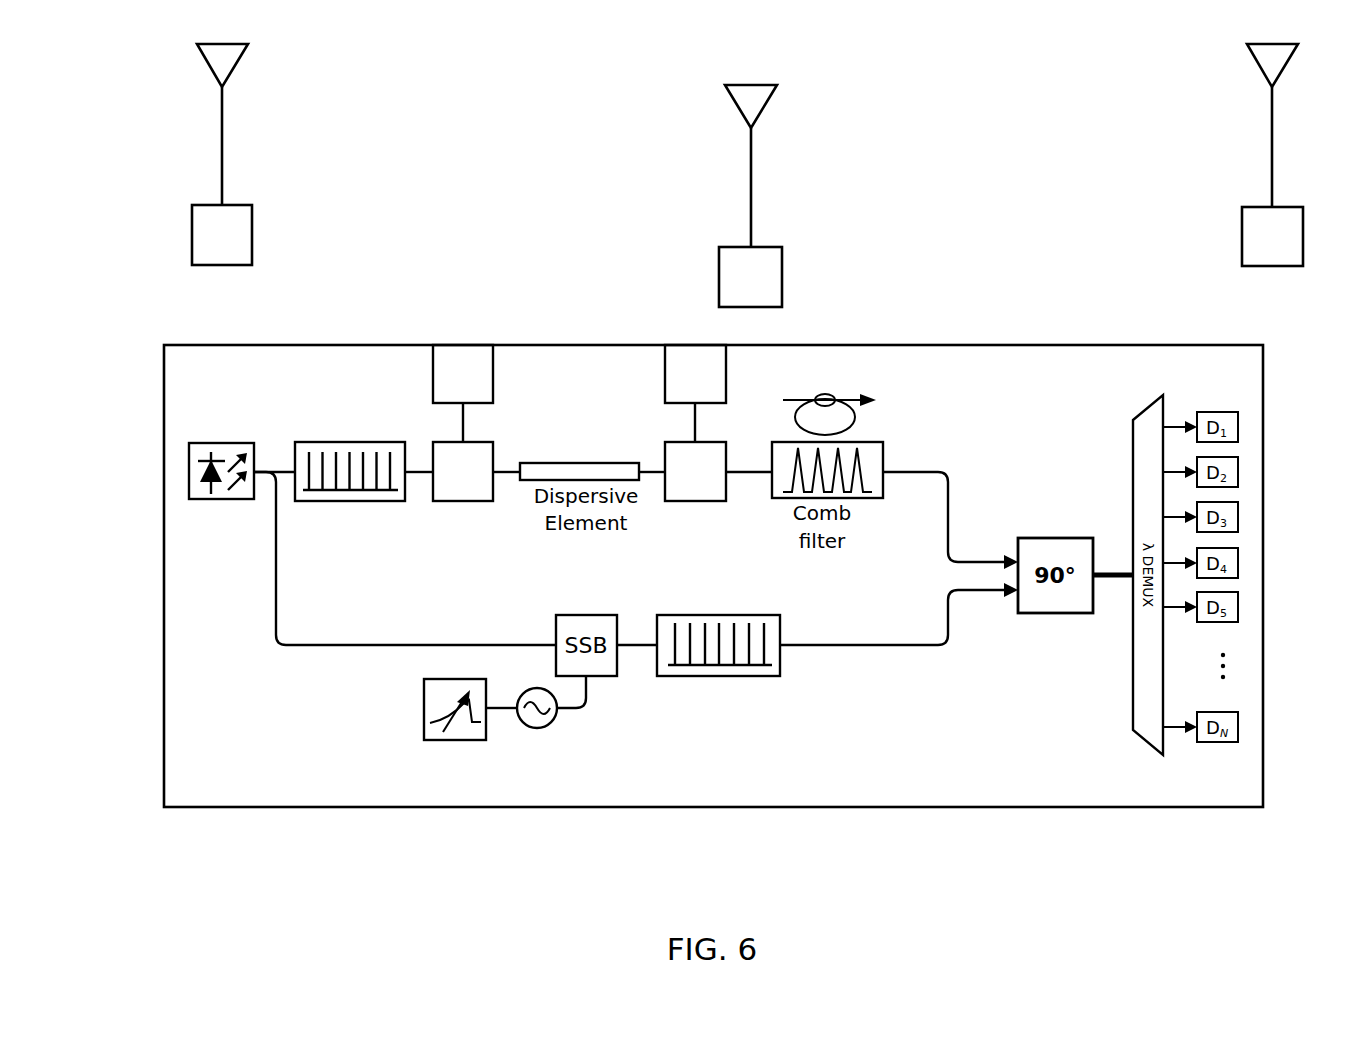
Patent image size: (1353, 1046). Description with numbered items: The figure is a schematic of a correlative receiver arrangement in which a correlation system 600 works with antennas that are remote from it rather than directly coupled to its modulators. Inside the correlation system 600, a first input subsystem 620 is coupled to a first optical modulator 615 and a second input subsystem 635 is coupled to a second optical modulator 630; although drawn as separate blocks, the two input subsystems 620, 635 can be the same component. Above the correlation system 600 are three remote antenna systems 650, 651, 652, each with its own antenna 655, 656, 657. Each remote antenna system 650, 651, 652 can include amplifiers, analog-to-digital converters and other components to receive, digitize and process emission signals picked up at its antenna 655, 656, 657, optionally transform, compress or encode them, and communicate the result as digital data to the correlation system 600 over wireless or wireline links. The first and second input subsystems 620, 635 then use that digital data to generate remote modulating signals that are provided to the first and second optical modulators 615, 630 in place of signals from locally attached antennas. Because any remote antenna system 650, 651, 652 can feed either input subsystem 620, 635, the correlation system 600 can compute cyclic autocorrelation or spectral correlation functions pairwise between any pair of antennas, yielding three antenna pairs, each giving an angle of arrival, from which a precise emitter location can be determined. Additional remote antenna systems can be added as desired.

The correlation system 600 is at (140, 298).
The first optical modulator 615 is at (493, 452).
The first input subsystem 620 is at (493, 380).
The second optical modulator 630 is at (688, 501).
The second input subsystem 635 is at (726, 380).
The remote antenna system 650 is at (243, 205).
The remote antenna system 651 is at (772, 247).
The remote antenna system 652 is at (1294, 207).
The antenna 655 is at (248, 52).
The antenna 656 is at (775, 93).
The antenna 657 is at (1250, 58).